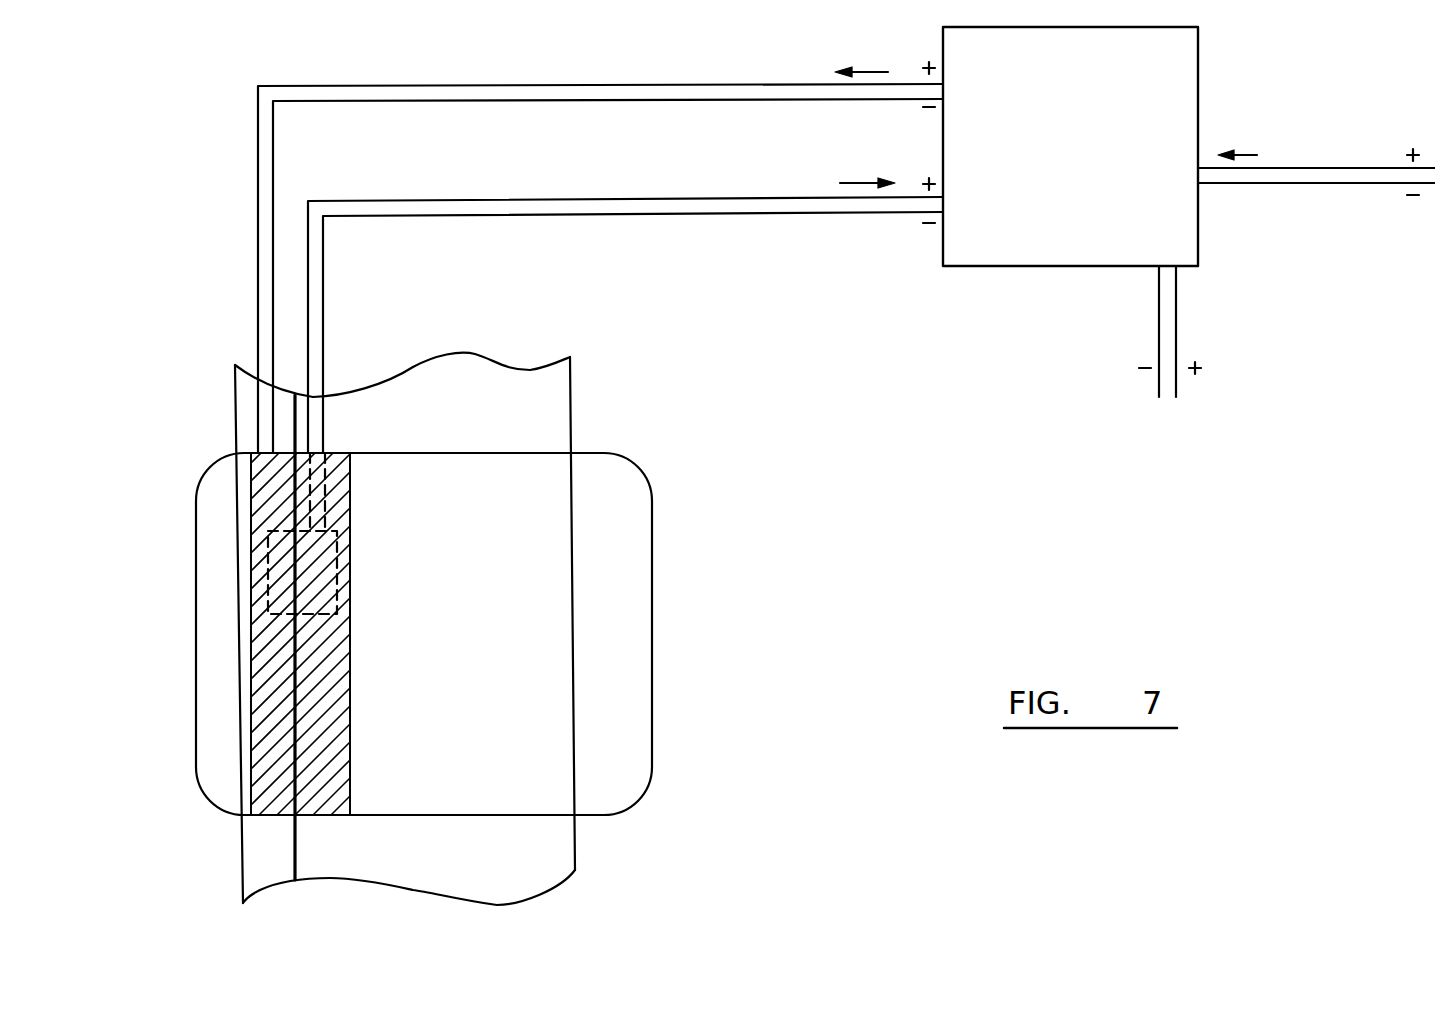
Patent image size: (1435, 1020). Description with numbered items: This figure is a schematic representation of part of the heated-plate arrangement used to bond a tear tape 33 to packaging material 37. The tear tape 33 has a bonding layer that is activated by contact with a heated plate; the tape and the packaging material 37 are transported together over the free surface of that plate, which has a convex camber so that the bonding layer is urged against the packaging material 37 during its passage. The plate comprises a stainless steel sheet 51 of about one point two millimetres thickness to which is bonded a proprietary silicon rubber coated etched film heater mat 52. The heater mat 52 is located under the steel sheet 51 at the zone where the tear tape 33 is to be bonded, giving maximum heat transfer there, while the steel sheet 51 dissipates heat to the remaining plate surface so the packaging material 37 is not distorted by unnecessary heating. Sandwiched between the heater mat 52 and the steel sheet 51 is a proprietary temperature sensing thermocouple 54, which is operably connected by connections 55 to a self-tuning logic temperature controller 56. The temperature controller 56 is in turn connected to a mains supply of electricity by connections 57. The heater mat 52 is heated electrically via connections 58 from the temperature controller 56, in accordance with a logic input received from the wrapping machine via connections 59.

The tear tape 33 is at (273, 850).
The packaging material 37 is at (522, 397).
The stainless steel sheet 51 is at (623, 538).
The heater mat 52 is at (260, 663).
The temperature sensing thermocouple 54 is at (267, 566).
The connections 55 is at (758, 198).
The self-tuning logic temperature controller 56 is at (999, 232).
The connections 57 is at (1303, 183).
The connections 58 is at (663, 84).
The connections 59 is at (1159, 293).